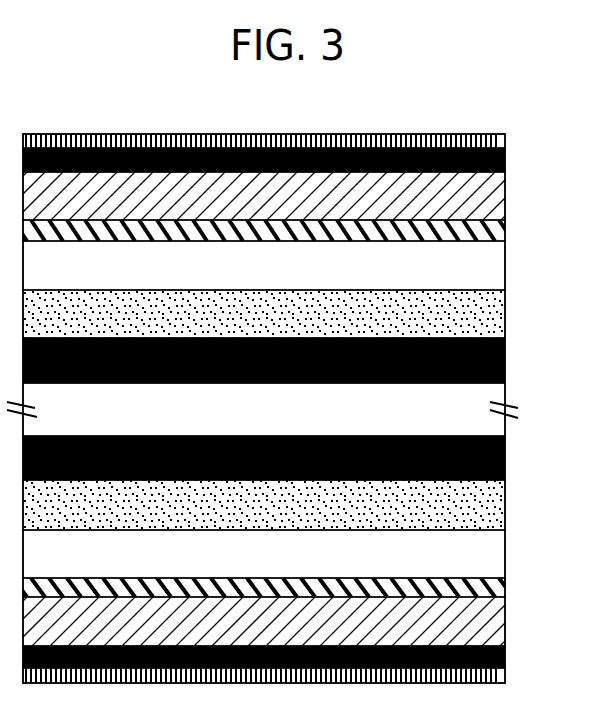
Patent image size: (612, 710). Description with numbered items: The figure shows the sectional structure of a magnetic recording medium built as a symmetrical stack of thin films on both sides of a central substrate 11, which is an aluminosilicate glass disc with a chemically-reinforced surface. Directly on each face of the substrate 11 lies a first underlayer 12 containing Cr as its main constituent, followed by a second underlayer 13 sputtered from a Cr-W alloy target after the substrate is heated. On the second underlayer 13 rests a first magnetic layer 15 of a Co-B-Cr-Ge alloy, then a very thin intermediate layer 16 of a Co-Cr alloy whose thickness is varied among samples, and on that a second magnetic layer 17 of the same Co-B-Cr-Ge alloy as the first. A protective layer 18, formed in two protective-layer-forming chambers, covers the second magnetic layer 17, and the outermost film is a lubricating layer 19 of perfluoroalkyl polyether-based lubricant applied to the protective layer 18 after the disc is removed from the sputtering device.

The substrate 11 is at (505, 428).
The first underlayer 12 is at (505, 361).
The second underlayer 13 is at (505, 312).
The first magnetic layer 15 is at (505, 265).
The intermediate layer 16 is at (505, 230).
The second magnetic layer 17 is at (505, 198).
The protective layer 18 is at (505, 163).
The lubricating layer 19 is at (505, 137).